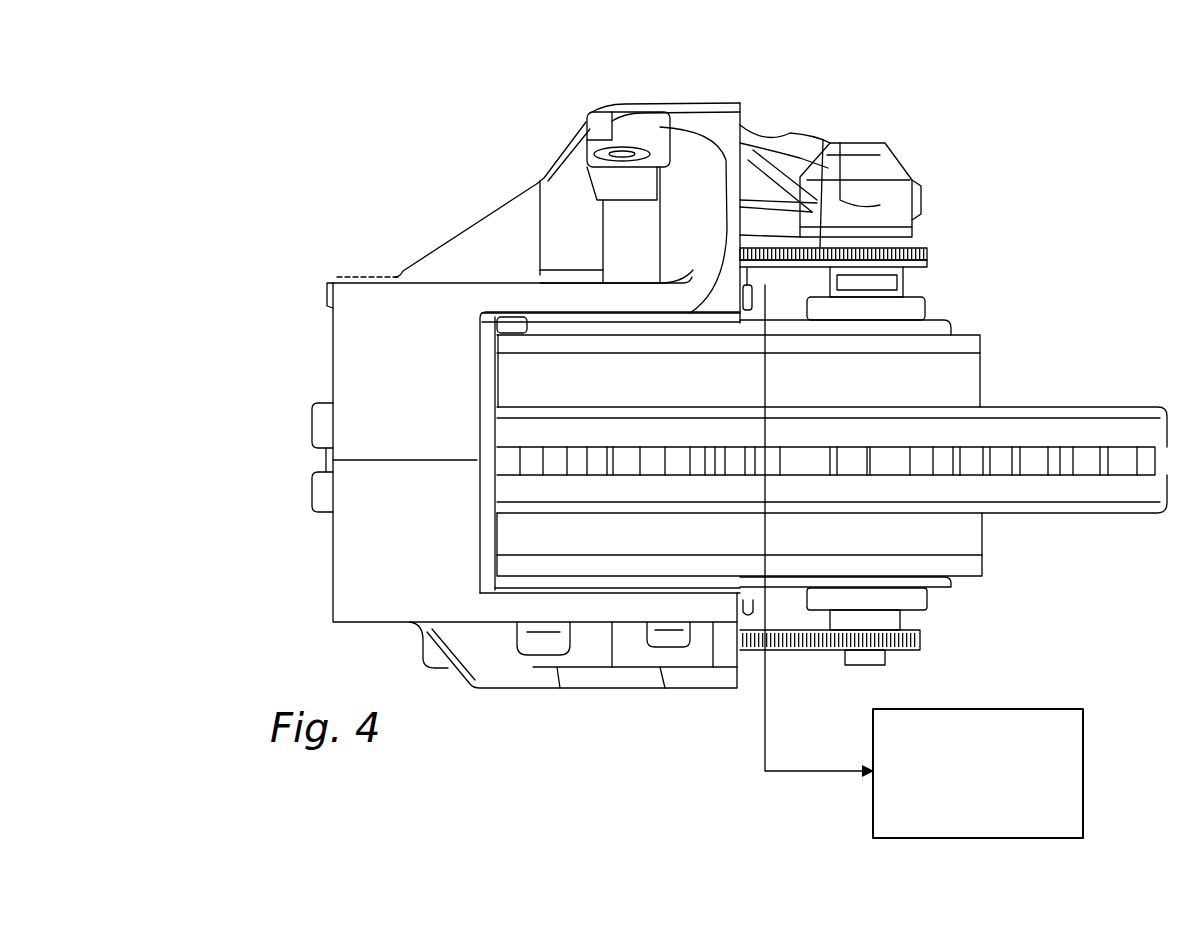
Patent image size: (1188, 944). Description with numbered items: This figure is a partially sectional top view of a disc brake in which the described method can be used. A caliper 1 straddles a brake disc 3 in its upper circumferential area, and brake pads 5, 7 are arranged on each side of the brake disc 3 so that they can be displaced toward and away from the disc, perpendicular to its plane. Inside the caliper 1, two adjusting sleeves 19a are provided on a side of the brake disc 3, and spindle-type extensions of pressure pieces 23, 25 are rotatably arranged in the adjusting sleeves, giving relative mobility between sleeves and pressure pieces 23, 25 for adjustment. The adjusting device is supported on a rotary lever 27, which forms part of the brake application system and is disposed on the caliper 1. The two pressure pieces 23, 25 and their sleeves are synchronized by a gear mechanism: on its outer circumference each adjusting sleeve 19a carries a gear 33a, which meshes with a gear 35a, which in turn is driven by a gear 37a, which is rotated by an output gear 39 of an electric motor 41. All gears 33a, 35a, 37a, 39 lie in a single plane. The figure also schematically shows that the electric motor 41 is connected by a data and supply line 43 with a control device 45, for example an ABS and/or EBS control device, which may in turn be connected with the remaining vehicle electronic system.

The caliper 1 is at (473, 237).
The brake disc 3 is at (1162, 480).
The brake pad 5 is at (985, 366).
The brake pad 7 is at (992, 557).
The adjusting sleeve 19a is at (880, 226).
The pressure piece 23 is at (910, 312).
The pressure piece 25 is at (907, 602).
The rotary lever 27 is at (770, 182).
The gear 33a is at (913, 243).
The gear 35a is at (828, 247).
The gear 37a is at (800, 245).
The output gear 39 is at (745, 247).
The electric motor 41 is at (768, 280).
The data and supply line 43 is at (819, 531).
The control device 45 is at (1068, 752).